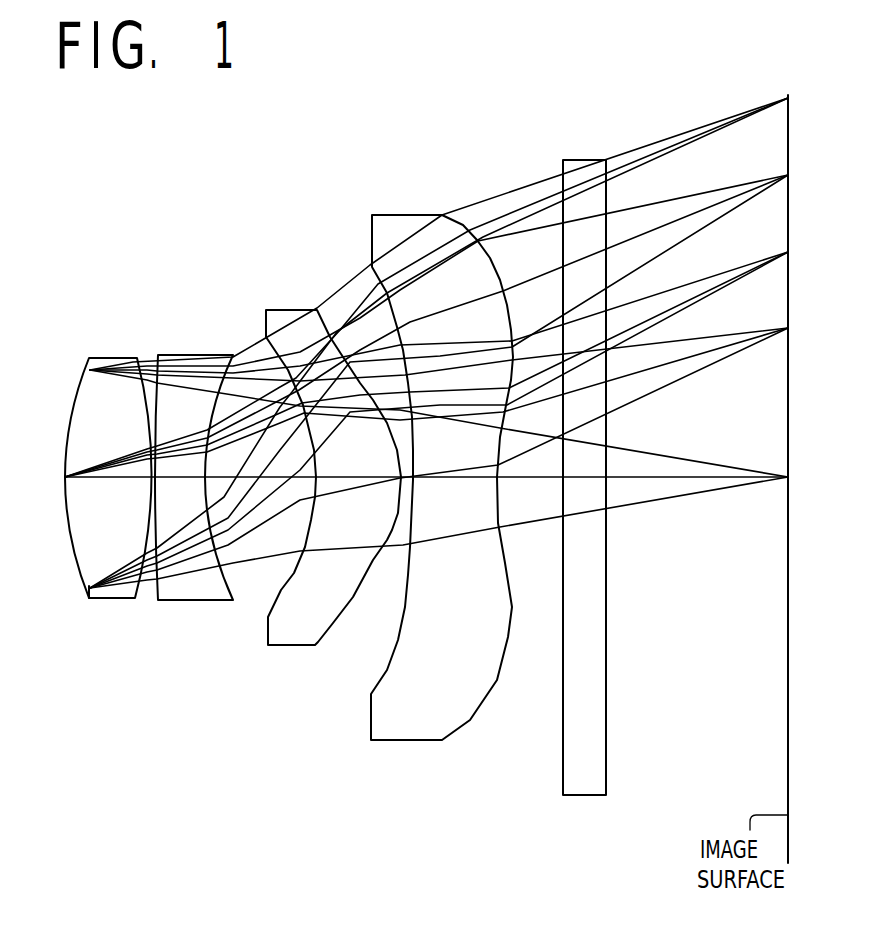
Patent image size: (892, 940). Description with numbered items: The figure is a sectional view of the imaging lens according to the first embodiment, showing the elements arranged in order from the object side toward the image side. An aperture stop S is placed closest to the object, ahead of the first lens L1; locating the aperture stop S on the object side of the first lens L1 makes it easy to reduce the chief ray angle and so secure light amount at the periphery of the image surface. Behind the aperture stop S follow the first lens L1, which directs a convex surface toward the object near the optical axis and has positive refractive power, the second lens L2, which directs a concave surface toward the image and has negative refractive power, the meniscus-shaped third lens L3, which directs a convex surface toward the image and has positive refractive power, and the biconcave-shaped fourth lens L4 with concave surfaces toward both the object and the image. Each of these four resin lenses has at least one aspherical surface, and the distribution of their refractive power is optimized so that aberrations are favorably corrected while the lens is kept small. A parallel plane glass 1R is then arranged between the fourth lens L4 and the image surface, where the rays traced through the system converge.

The aperture stop S is at (81, 600).
The first lens L1 is at (112, 600).
The second lens L2 is at (180, 602).
The third lens L3 is at (297, 648).
The fourth lens L4 is at (423, 742).
The parallel plane glass 1R is at (592, 797).